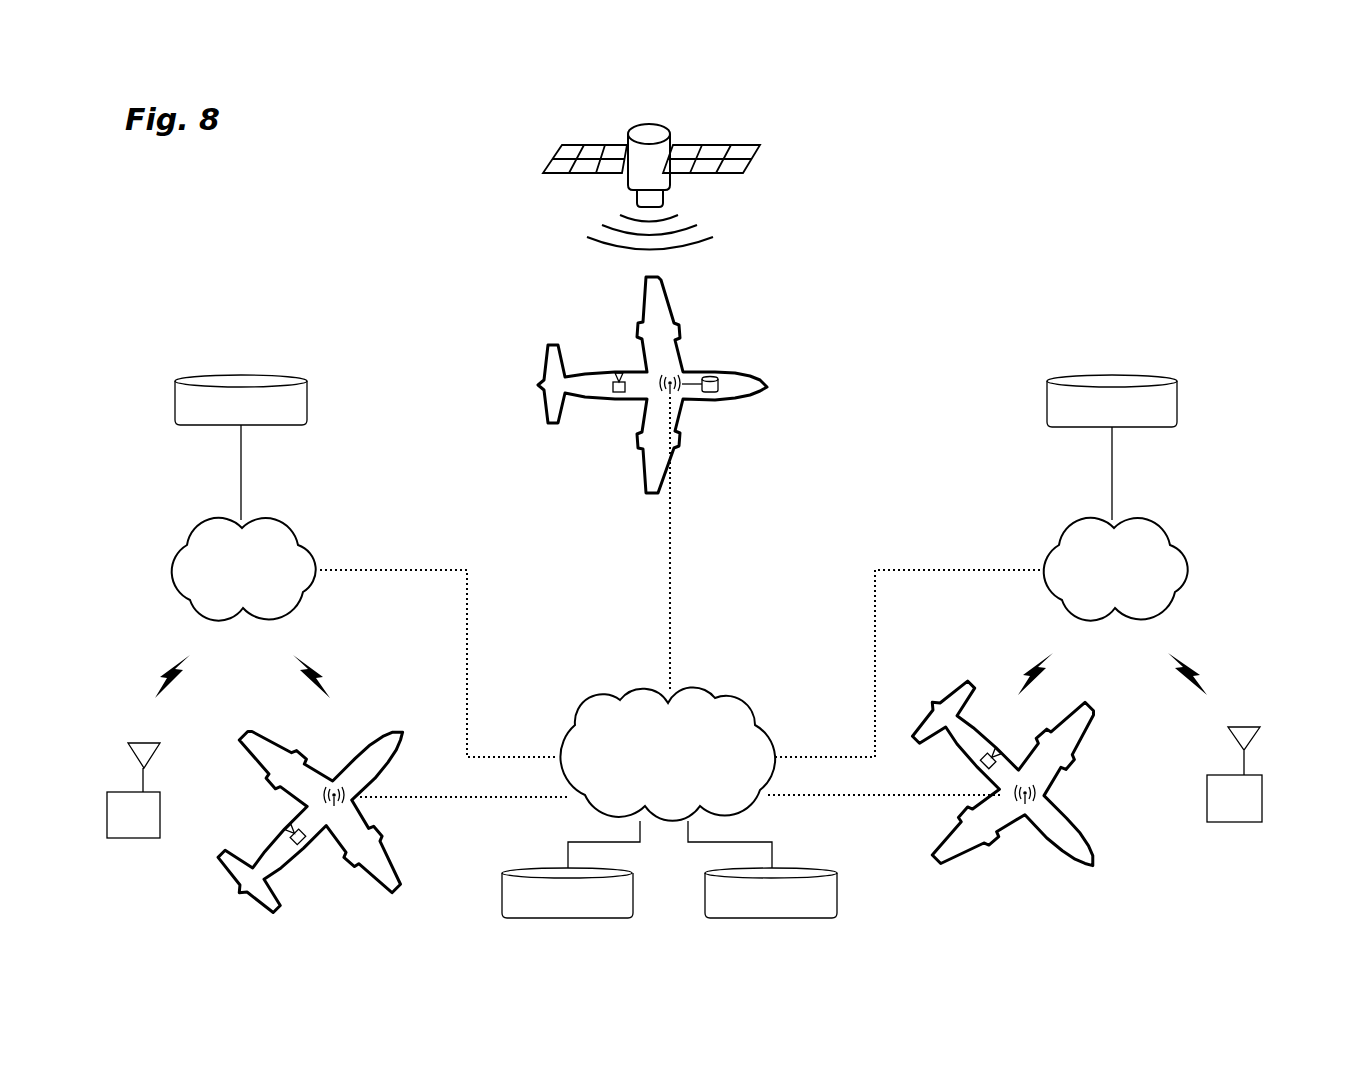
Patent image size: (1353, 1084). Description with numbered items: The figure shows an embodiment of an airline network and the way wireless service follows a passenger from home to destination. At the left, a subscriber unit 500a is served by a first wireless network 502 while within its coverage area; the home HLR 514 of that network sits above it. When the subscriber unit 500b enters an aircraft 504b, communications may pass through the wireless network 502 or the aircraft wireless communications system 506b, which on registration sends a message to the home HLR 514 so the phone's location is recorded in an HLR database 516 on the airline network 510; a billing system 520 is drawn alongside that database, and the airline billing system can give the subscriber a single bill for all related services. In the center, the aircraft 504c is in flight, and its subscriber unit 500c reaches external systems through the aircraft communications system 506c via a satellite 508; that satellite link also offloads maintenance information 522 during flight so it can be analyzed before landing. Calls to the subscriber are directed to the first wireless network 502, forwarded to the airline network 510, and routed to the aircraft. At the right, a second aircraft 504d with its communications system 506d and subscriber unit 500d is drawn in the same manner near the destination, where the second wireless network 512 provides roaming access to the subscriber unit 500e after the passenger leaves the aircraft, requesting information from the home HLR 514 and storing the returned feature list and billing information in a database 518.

The satellite 508 is at (743, 167).
The aircraft 504c is at (549, 345).
The aircraft communications system 506c is at (668, 378).
The maintenance information 522 is at (710, 376).
The subscriber unit 500c is at (617, 393).
The home HLR 514 is at (240, 373).
The first wireless network 502 is at (226, 513).
The database 518 is at (1112, 373).
The second wireless network 512 is at (1097, 513).
The airline network 510 is at (745, 717).
The HLR database 516 is at (636, 892).
The billing system 520 is at (840, 892).
The aircraft 504b is at (403, 727).
The aircraft wireless communications system 506b is at (334, 784).
The subscriber unit 500b is at (300, 842).
The subscriber unit 500a is at (136, 838).
The aircraft 504d is at (1057, 850).
The aircraft wireless transceiver / base station 506d is at (1042, 794).
The subscriber unit 500d is at (978, 772).
The subscriber unit 500e is at (1232, 822).